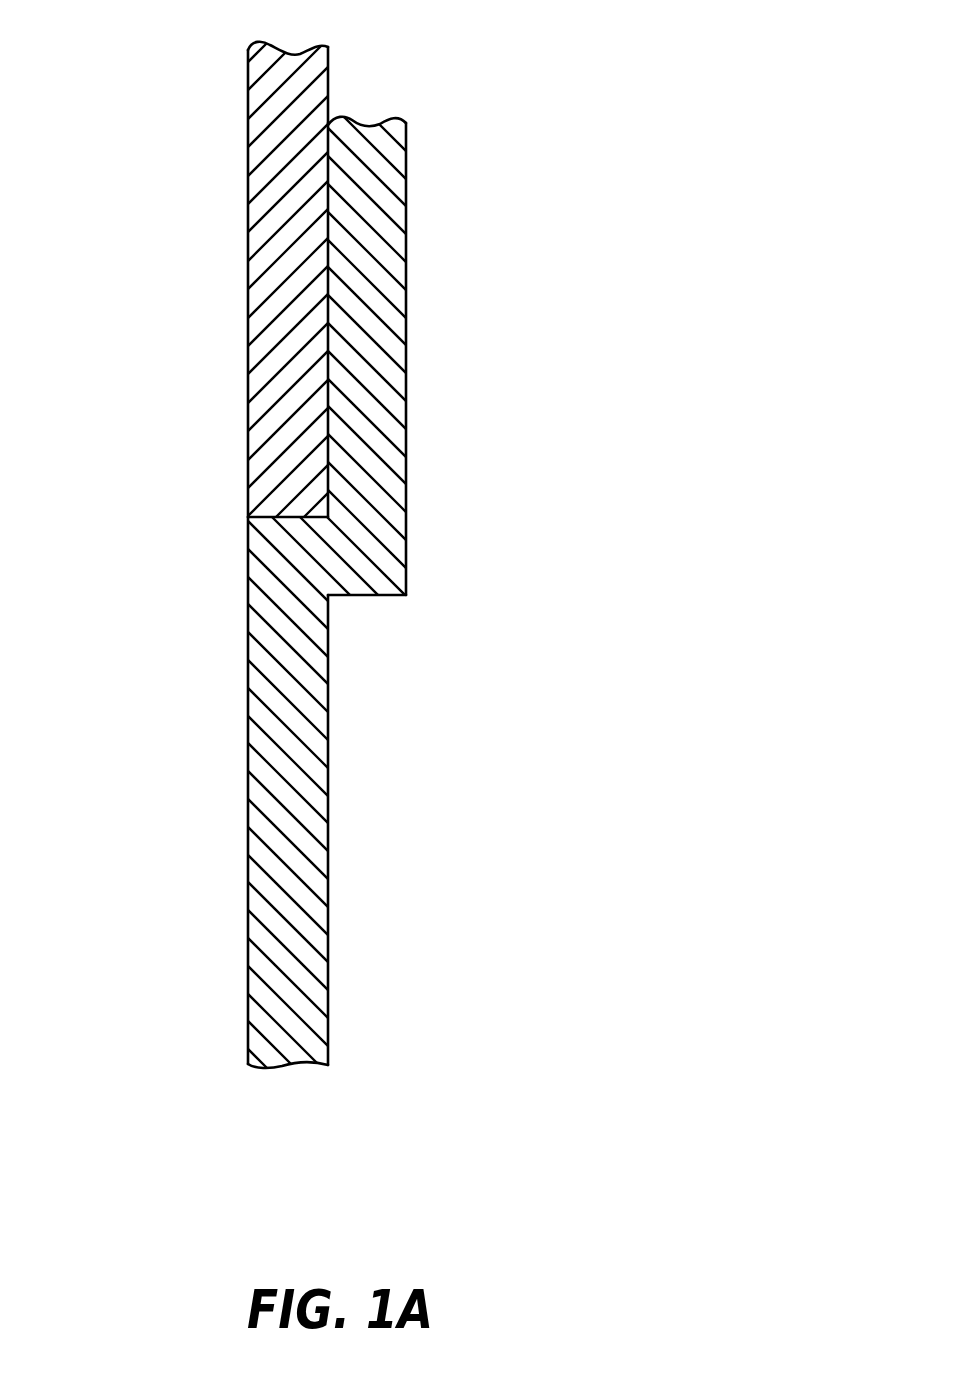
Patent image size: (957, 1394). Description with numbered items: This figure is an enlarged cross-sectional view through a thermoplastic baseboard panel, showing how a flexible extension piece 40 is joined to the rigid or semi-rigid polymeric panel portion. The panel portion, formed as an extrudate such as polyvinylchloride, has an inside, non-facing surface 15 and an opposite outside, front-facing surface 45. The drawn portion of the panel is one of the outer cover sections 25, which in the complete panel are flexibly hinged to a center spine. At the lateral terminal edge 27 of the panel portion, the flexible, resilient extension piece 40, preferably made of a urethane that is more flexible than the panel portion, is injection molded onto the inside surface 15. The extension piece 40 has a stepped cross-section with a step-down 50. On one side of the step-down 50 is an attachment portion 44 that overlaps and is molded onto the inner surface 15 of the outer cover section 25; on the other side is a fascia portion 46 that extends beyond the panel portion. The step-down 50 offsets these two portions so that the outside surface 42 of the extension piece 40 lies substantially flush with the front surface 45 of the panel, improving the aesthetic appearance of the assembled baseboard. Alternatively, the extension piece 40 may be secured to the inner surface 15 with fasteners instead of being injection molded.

The inside surface 15 is at (248, 332).
The outer cover section 25 is at (240, 132).
The outside surface 45 is at (328, 87).
The flexible extension piece 40 is at (445, 353).
The attachment portion 44 is at (416, 206).
The lateral terminal edge 27 is at (292, 517).
The step-down 50 is at (367, 595).
The outside surface of extension piece 42 is at (248, 790).
The fascia portion 46 is at (344, 915).